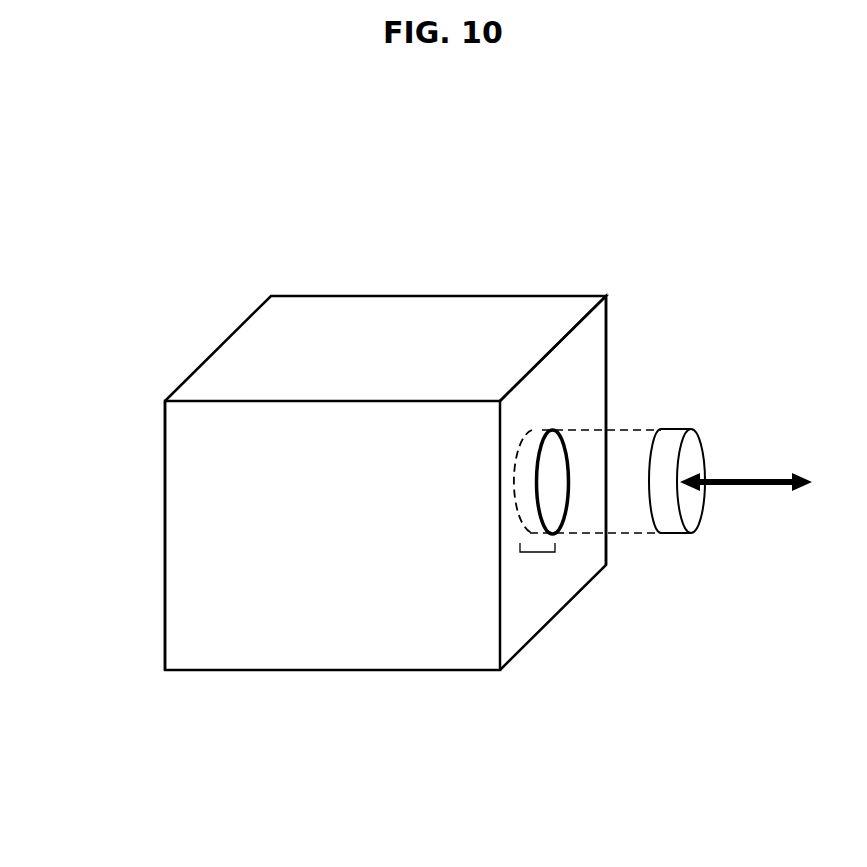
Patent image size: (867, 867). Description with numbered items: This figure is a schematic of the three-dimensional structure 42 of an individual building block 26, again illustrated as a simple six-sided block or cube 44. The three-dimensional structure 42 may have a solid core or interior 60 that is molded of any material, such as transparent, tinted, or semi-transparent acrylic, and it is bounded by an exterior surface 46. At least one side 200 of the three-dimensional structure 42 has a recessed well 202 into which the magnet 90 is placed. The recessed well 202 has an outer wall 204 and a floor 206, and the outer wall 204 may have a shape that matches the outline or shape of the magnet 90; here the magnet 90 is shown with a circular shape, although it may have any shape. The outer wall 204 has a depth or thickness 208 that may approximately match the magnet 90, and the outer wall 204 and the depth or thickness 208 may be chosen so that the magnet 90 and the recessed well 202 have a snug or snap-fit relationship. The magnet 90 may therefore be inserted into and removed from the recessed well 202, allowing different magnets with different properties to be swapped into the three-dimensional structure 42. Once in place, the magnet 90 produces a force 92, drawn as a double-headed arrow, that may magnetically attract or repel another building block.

The building block 26 is at (180, 234).
The three-dimensional structure 42 is at (164, 433).
The six-sided cube 44 is at (607, 296).
The exterior surface 46 is at (289, 315).
The interior 60 is at (195, 553).
The magnet 90 is at (693, 455).
The force 92 is at (773, 487).
The side 200 is at (596, 356).
The recessed well 202 is at (552, 458).
The outer wall 204 is at (528, 435).
The floor 206 is at (512, 497).
The depth or thickness 208 is at (538, 552).